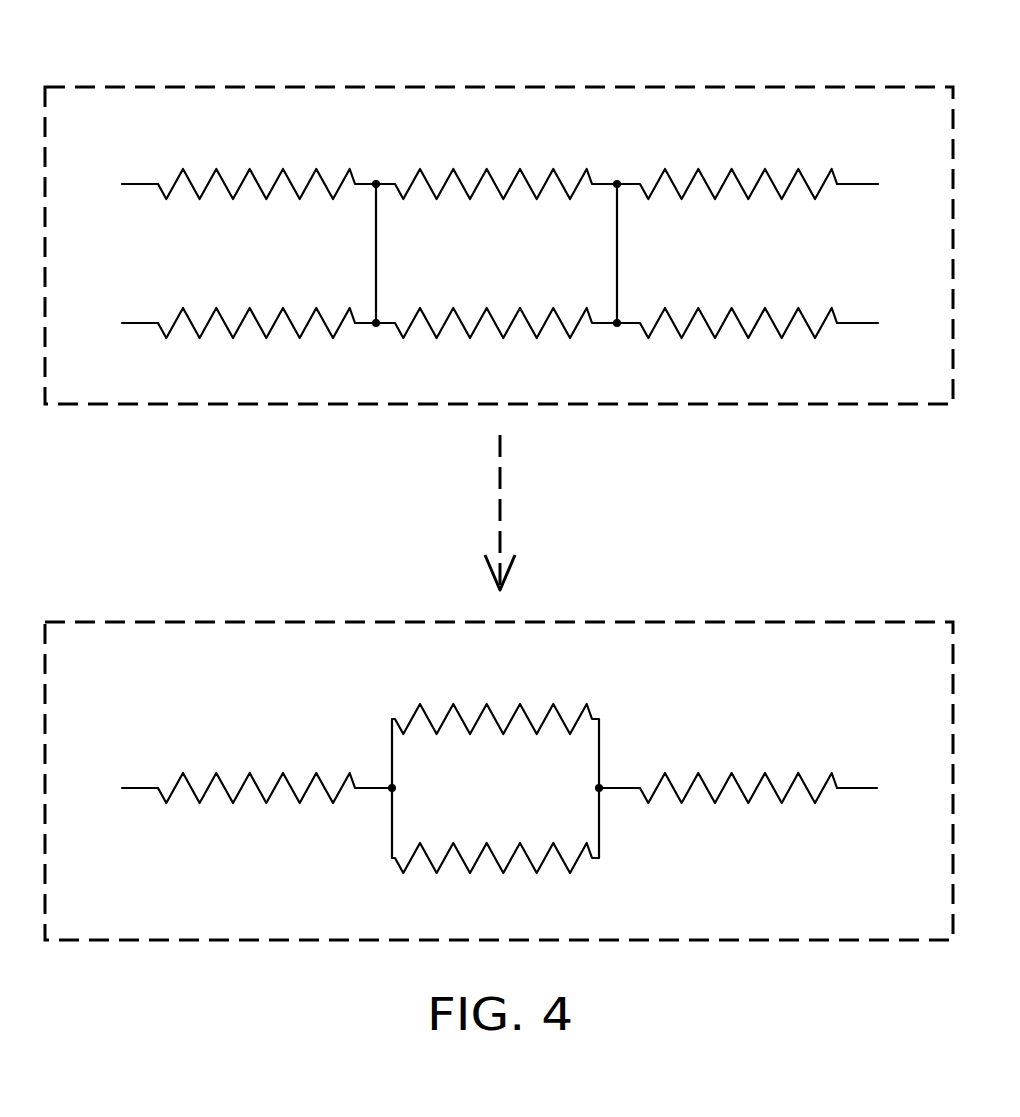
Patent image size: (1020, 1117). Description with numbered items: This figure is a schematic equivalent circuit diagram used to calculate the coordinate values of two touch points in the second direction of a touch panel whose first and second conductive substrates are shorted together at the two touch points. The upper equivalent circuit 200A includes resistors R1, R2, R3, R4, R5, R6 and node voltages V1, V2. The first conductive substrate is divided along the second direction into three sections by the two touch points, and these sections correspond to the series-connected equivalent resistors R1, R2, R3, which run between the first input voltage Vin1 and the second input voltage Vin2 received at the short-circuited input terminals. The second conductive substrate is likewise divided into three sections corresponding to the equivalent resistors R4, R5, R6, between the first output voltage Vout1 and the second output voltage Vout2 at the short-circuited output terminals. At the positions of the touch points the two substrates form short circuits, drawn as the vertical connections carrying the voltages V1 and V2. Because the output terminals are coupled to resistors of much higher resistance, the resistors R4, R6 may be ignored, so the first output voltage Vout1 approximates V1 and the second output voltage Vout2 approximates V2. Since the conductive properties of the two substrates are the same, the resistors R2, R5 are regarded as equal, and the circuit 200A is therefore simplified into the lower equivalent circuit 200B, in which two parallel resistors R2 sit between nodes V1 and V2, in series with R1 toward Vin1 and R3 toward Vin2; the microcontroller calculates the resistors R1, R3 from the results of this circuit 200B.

The equivalent circuit 200A is at (818, 85).
The equivalent circuit 200B is at (818, 620).
The equivalent resistor R1 is at (275, 468).
The equivalent resistor R2 is at (496, 524).
The equivalent resistor R3 is at (718, 468).
The equivalent resistor R4 is at (267, 306).
The equivalent resistor R5 is at (496, 306).
The equivalent resistor R6 is at (727, 306).
The node voltage V1 is at (365, 830).
The node voltage V2 is at (627, 828).
The first input voltage Vin1 is at (113, 485).
The second input voltage Vin2 is at (884, 485).
The first output voltage Vout1 is at (106, 321).
The second output voltage Vout2 is at (892, 321).